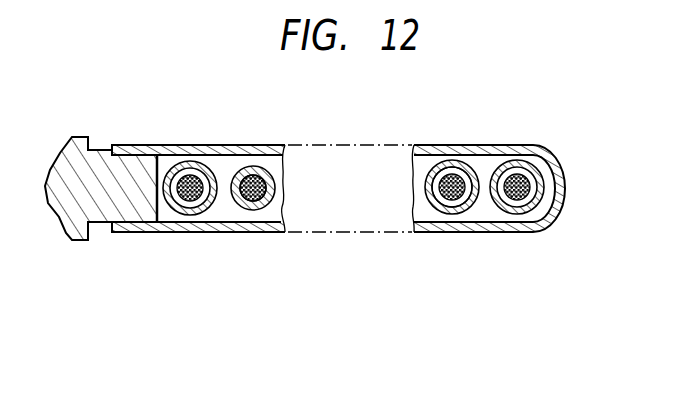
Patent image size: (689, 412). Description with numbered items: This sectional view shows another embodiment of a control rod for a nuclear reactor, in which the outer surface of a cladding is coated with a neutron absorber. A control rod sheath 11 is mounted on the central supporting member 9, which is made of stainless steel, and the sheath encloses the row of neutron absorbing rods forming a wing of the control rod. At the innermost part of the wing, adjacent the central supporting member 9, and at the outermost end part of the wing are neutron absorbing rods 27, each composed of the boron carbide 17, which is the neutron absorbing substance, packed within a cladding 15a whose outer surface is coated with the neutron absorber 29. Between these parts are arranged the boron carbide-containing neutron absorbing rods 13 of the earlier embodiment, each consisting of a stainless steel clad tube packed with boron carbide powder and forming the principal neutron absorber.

The central supporting member 9 is at (98, 216).
The control rod sheath 11 is at (213, 229).
The neutron absorbing rod 13 is at (257, 165).
The neutron absorbing rod 27 is at (183, 162).
The neutron absorber 29 is at (470, 172).
The boron carbide 17 is at (445, 212).
The cladding 15a is at (472, 209).